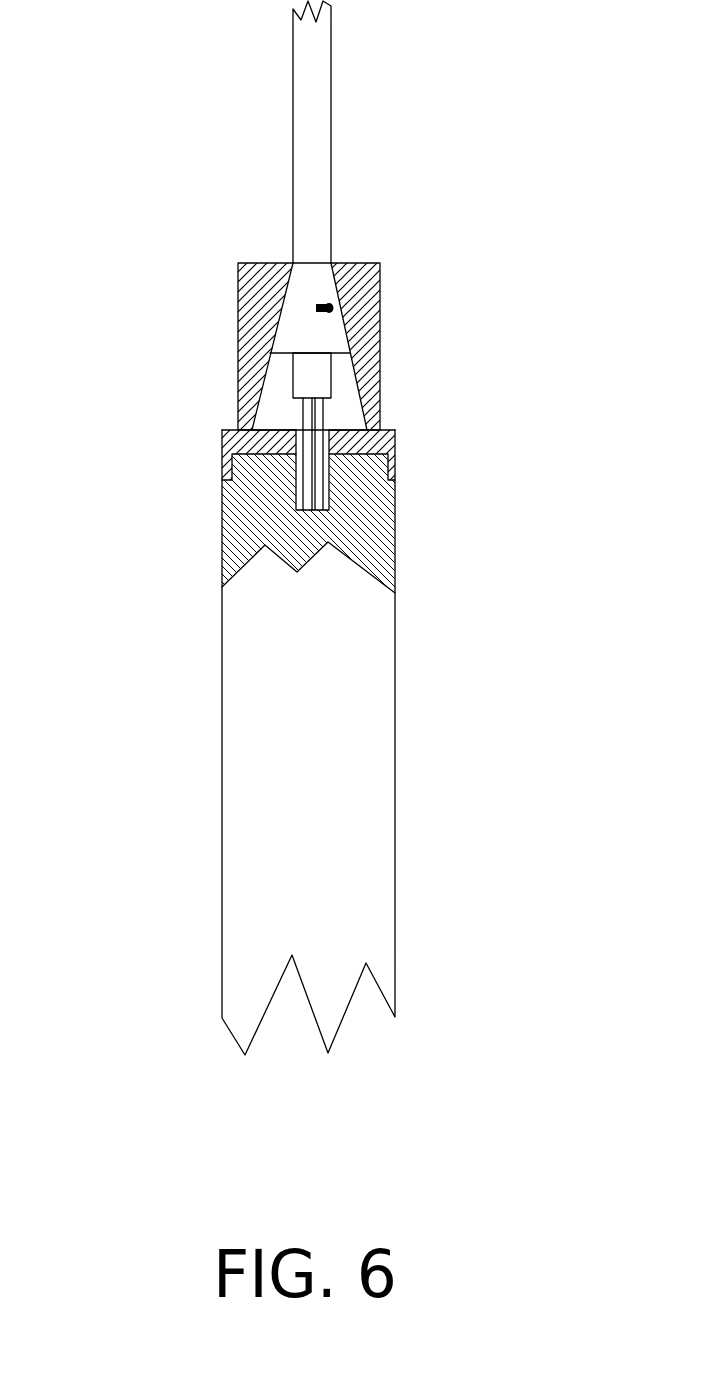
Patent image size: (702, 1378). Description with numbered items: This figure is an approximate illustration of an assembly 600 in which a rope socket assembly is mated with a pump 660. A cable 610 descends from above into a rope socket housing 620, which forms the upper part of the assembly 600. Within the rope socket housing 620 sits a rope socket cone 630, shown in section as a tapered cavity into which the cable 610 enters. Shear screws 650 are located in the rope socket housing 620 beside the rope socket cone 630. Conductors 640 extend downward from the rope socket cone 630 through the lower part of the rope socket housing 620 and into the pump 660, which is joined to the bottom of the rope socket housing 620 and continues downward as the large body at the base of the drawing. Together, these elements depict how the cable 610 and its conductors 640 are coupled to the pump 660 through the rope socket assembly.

The assembly 600 is at (108, 144).
The cable 610 is at (293, 110).
The rope socket housing 620 is at (238, 318).
The rope socket cone 630 is at (292, 278).
The conductors 640 is at (321, 418).
The shear screws 650 is at (333, 306).
The pump 660 is at (373, 515).